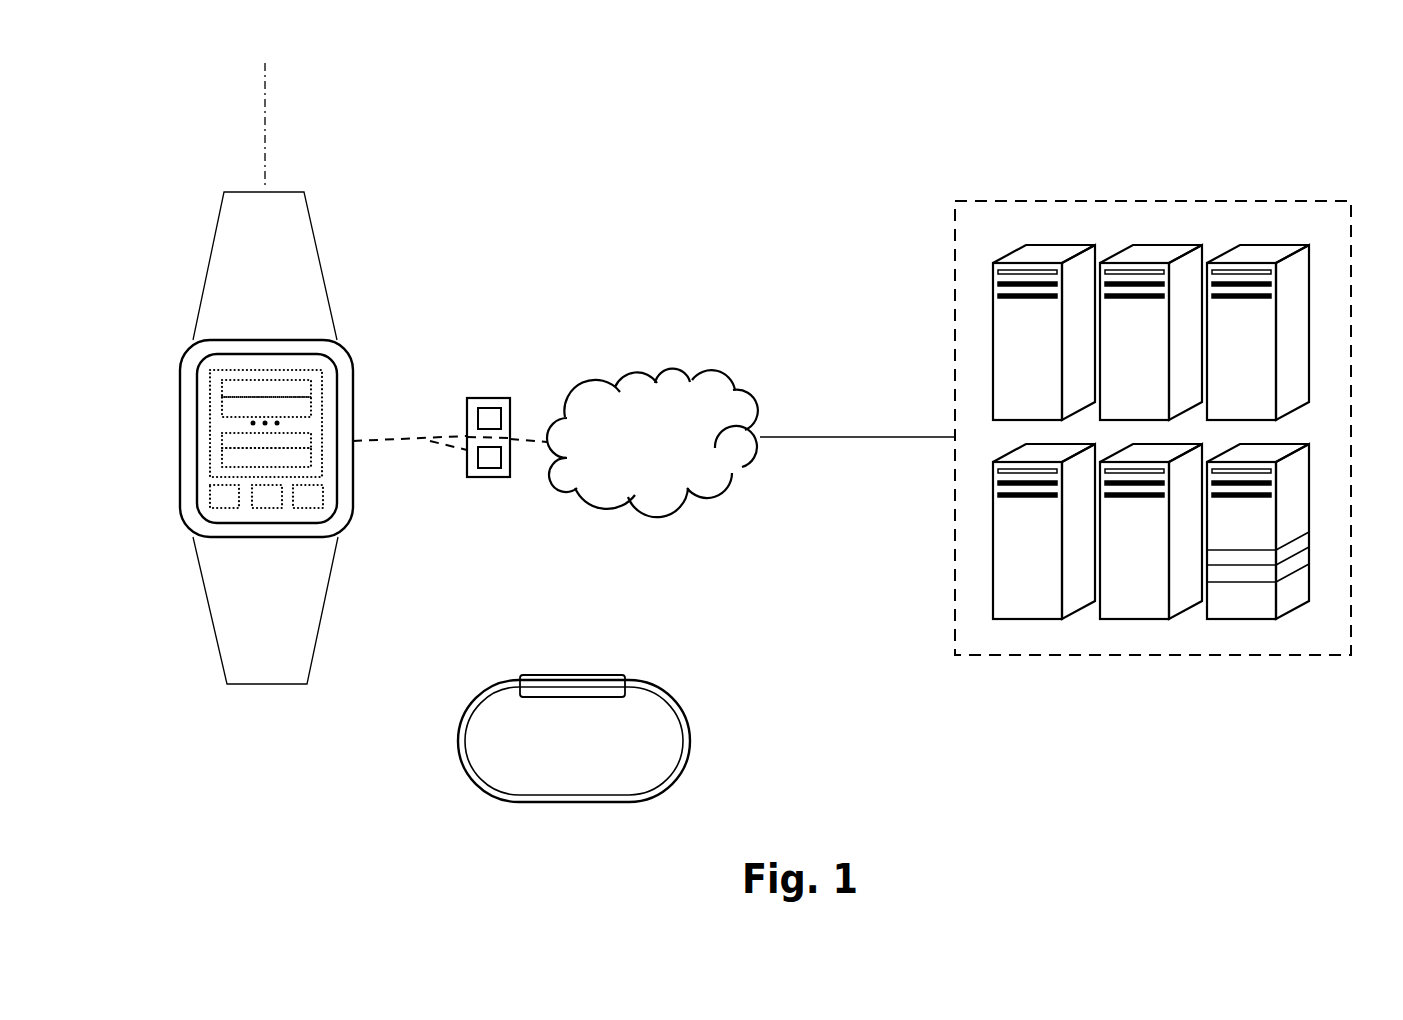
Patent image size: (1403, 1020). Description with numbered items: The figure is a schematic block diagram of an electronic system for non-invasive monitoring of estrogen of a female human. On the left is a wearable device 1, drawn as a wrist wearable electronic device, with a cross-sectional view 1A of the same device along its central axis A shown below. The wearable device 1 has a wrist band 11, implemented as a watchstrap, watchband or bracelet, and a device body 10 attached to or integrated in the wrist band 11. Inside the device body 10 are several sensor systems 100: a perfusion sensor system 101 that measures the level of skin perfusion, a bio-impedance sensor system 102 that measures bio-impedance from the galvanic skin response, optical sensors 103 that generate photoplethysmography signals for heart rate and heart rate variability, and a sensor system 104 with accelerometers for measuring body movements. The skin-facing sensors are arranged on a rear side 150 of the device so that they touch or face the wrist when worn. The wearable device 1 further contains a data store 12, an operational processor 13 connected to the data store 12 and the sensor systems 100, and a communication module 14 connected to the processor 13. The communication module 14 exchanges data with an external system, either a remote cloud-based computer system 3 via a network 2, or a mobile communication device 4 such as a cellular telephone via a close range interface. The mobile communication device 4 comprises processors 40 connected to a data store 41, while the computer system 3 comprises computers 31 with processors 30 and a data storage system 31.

The wearable device 1 is at (150, 581).
The cross-sectional view of the wearable device 1A is at (453, 788).
The network 2 is at (602, 500).
The computer system 3 is at (1317, 676).
The mobile communication device 4 is at (488, 400).
The device body 10 is at (366, 496).
The wrist band 11 is at (312, 267).
The data store 12 is at (217, 502).
The operational processor 13 is at (260, 503).
The communication module 14 is at (317, 499).
The processors 30 is at (1302, 542).
The computers / data storage system 31 is at (1302, 560).
The processors 40 is at (490, 463).
The data store 41 is at (497, 417).
The sensor systems 100 is at (318, 378).
The perfusion sensor system 101 is at (223, 388).
The bio-impedance sensor system 102 is at (223, 410).
The optical sensors 103 is at (225, 438).
The sensor system with accelerometers 104 is at (225, 463).
The rear side 150 is at (578, 709).